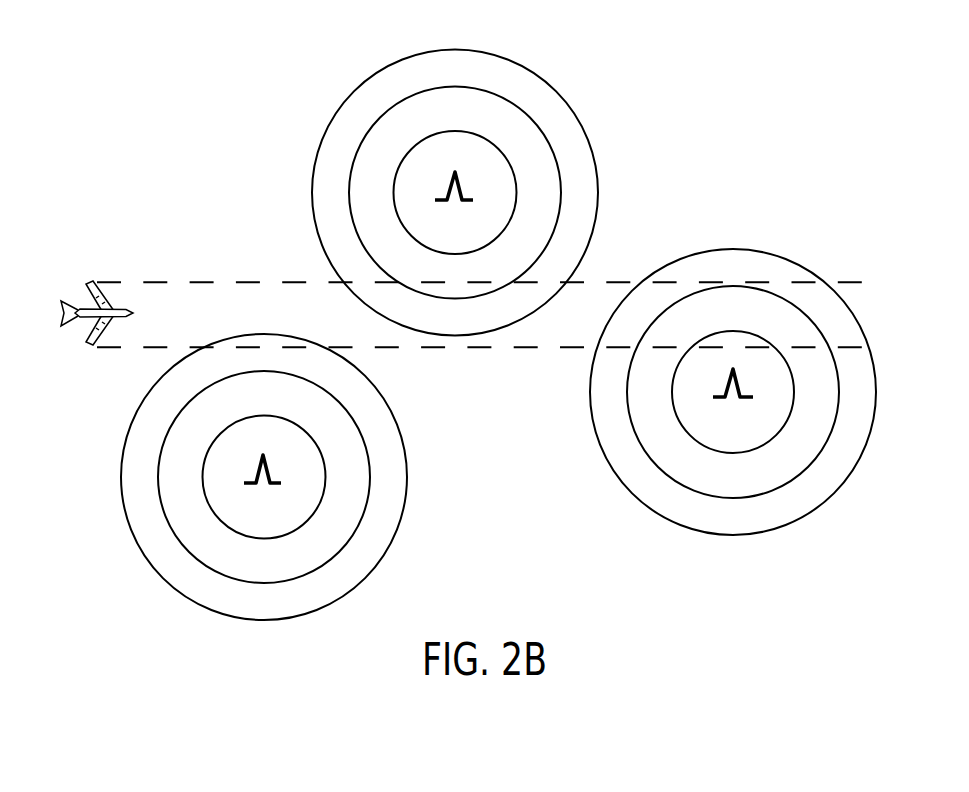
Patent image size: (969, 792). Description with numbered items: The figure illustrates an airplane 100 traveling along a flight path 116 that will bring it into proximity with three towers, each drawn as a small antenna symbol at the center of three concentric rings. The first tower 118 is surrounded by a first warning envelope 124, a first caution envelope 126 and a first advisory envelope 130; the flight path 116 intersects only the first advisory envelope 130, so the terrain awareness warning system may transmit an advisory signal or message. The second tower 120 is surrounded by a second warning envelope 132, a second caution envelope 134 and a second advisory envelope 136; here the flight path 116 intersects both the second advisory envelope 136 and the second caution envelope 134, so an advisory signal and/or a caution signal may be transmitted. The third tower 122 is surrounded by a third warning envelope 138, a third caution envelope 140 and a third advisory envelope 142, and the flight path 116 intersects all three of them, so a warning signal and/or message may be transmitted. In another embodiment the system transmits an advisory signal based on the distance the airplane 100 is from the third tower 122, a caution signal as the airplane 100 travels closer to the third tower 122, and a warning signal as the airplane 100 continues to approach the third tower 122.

The airplane 100 is at (88, 282).
The flight path 116 is at (196, 292).
The first tower 118 is at (248, 483).
The second tower 120 is at (443, 200).
The third tower 122 is at (721, 397).
The first warning envelope 124 is at (202, 483).
The first caution envelope 126 is at (174, 537).
The first advisory envelope 130 is at (183, 595).
The second warning envelope 132 is at (368, 78).
The second caution envelope 134 is at (363, 138).
The second advisory envelope 136 is at (393, 193).
The third warning envelope 138 is at (724, 535).
The third caution envelope 140 is at (762, 495).
The third advisory envelope 142 is at (767, 440).